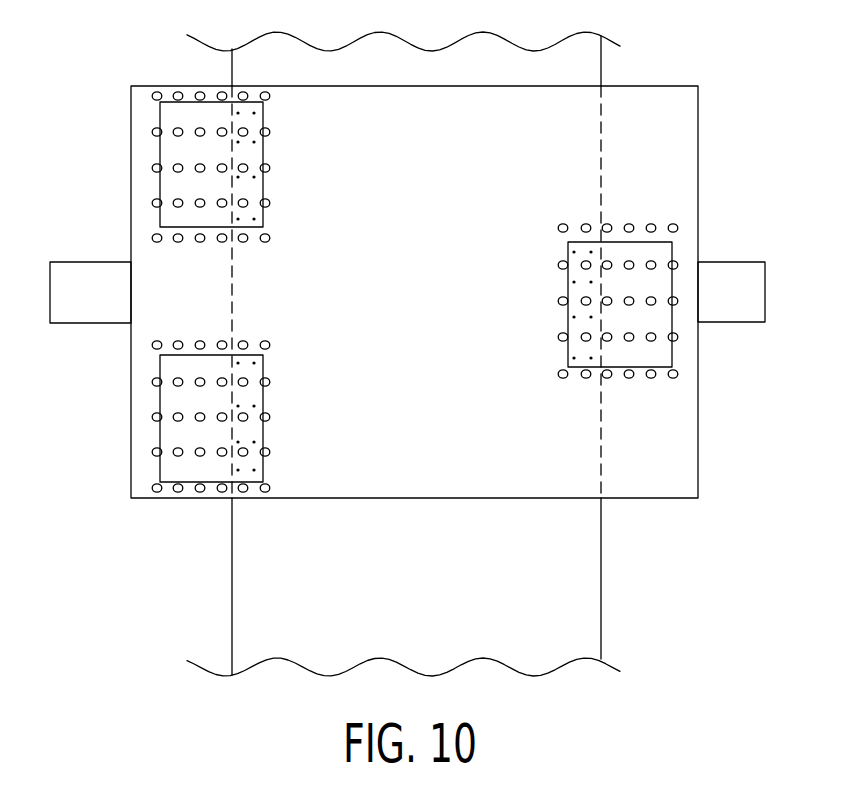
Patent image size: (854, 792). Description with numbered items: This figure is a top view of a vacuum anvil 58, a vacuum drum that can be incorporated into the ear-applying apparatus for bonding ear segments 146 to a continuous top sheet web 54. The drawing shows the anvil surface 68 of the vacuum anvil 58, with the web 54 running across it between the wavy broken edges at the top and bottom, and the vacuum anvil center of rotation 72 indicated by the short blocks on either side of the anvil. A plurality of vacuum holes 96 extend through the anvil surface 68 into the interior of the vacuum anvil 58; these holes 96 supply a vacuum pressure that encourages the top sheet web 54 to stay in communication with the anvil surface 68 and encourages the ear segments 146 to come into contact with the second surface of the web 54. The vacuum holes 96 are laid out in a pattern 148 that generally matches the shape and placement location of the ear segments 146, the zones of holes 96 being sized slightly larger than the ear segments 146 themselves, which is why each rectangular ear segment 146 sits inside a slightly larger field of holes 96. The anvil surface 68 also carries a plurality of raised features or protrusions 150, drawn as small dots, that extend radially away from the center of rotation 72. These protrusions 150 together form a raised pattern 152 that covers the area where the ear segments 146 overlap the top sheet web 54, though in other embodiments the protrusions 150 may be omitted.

The top sheet web 54 is at (572, 611).
The vacuum anvil 58 is at (712, 116).
The anvil surface 68 is at (672, 475).
The vacuum anvil center of rotation 72 is at (746, 290).
The vacuum holes 96 is at (178, 493).
The ear segments 146 is at (172, 210).
The pattern 148 is at (657, 213).
The raised features/protrusions 150 is at (254, 364).
The raised pattern 152 is at (577, 365).